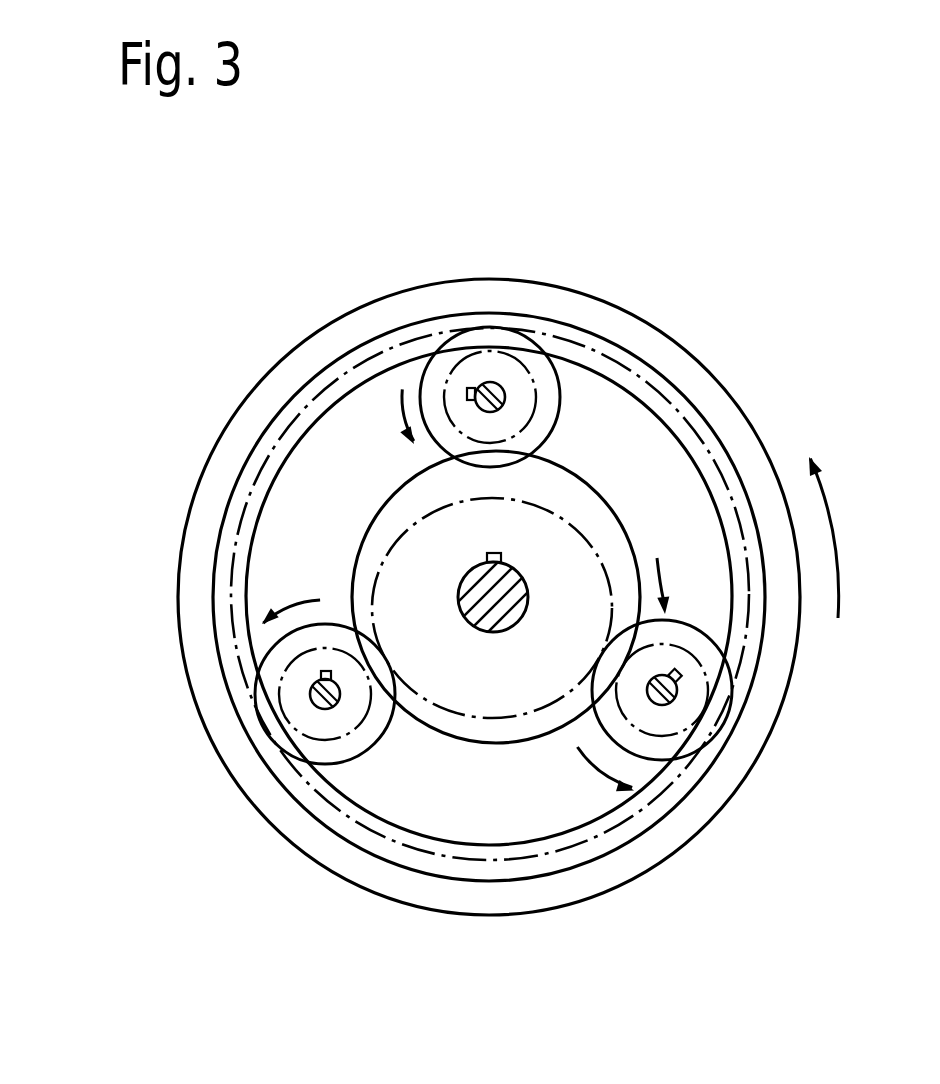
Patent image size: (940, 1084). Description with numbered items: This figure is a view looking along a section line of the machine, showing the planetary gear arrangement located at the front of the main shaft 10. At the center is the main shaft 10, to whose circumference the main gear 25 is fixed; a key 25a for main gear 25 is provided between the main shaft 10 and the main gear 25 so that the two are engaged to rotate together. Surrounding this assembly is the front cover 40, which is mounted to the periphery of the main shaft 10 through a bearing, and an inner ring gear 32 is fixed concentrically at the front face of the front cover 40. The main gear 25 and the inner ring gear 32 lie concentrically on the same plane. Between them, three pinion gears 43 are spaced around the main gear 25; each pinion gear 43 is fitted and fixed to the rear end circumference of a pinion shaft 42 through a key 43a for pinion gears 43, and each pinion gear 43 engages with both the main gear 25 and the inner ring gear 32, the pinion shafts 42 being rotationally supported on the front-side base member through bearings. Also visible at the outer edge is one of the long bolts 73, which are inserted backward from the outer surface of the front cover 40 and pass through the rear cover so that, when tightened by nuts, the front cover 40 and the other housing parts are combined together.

The main shaft 10 is at (503, 577).
The main gear 25 is at (400, 584).
The key for main gear 25a is at (491, 557).
The inner ring gear 32 is at (680, 362).
The front cover 40 is at (242, 378).
The pinion shaft 42 is at (506, 399).
The pinion gear 43 is at (538, 427).
The key for pinion gear 43a is at (467, 397).
The long bolt 73 is at (838, 586).